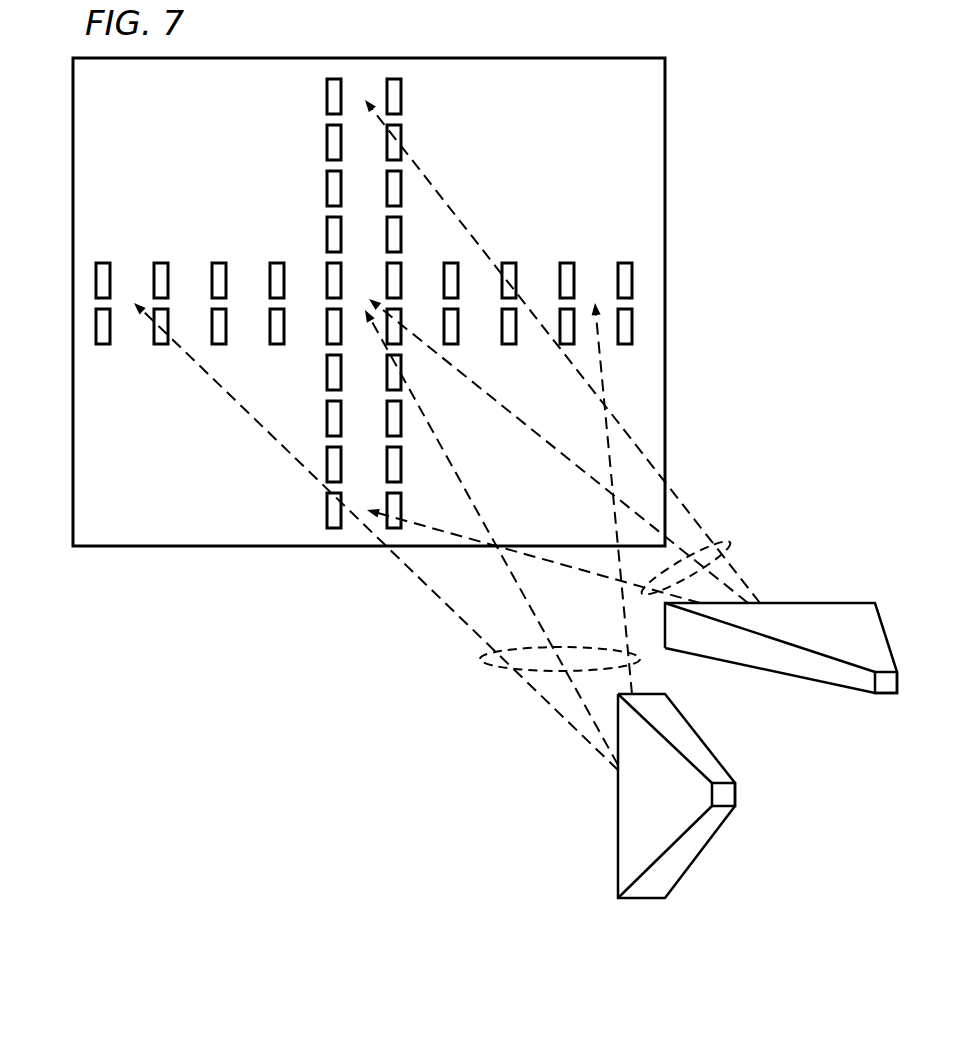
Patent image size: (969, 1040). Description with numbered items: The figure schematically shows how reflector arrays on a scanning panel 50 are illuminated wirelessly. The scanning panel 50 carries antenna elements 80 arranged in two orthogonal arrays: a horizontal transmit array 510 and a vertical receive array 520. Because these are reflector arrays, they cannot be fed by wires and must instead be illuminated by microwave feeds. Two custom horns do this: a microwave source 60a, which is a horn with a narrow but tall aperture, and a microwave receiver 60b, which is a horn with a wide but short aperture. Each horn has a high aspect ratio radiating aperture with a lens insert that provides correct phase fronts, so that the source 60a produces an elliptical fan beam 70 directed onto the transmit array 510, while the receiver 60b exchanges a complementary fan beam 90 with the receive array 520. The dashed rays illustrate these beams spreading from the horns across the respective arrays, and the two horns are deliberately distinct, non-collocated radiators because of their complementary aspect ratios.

The scanning panel 50 is at (66, 200).
The transmit array 510 is at (65, 258).
The receive array 520 is at (403, 50).
The antenna element 80 is at (402, 97).
The fan beam 70 is at (482, 659).
The fan beam 90 is at (727, 553).
The microwave source 60a is at (618, 818).
The microwave receiver 60b is at (828, 603).